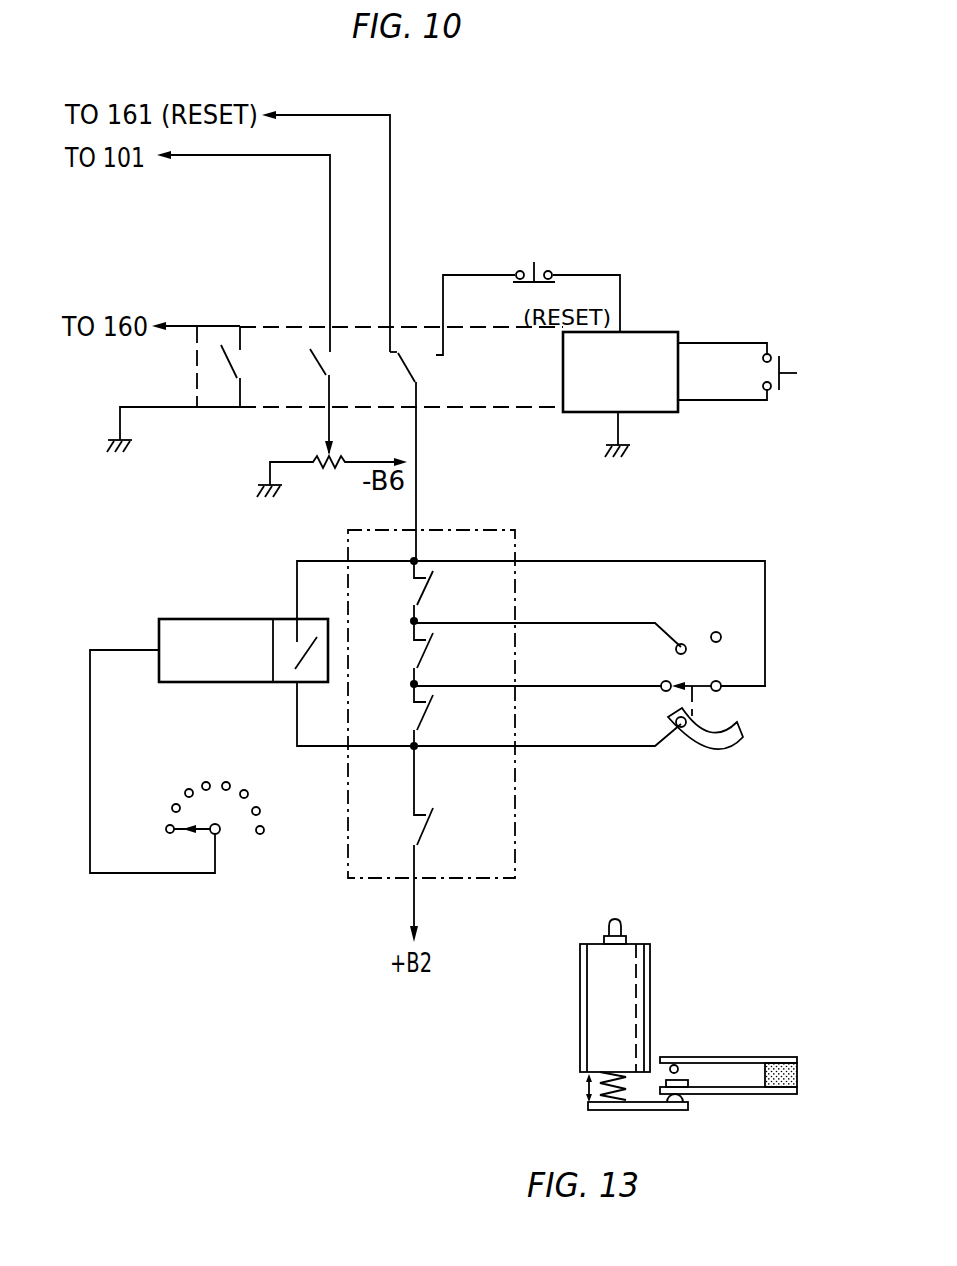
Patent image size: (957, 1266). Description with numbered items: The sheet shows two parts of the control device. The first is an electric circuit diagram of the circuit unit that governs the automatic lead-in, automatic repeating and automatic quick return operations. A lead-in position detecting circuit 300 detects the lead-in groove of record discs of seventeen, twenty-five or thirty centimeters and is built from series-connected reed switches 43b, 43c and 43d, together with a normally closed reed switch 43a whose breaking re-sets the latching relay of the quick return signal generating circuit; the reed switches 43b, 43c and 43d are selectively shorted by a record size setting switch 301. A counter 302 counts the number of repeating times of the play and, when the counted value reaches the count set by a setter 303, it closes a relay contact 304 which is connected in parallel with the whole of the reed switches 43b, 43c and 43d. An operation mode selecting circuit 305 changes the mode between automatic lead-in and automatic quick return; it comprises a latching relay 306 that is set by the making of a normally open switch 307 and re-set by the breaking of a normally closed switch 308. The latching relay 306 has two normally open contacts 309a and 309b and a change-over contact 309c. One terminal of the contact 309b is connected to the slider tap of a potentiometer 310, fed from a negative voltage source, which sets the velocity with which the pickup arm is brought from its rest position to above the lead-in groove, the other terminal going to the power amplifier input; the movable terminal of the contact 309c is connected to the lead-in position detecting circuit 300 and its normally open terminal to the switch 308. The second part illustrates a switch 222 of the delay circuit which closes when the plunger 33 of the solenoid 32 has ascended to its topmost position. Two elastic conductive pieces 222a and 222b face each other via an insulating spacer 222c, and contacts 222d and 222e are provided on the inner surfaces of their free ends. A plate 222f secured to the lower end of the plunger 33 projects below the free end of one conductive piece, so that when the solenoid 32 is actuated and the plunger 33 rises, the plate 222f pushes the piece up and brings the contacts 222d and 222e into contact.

In FIG. 10, the switch of the normally closed type 308 is at (537, 272).
In FIG. 10, the operation mode selecting circuit 305 is at (627, 328).
In FIG. 10, the switch of the normally open type 307 is at (781, 381).
In FIG. 10, the latching relay 306 is at (598, 413).
In FIG. 10, the normally open type contact 309a is at (240, 373).
In FIG. 10, the normally open type contact 309b is at (327, 373).
In FIG. 10, the change-over contact 309c is at (416, 373).
In FIG. 10, the potentiometer 310 is at (332, 462).
In FIG. 10, the lead-in position detecting circuit 300 is at (450, 530).
In FIG. 10, the counter 302 is at (185, 619).
In FIG. 10, the relay contact 304 is at (301, 660).
In FIG. 10, the setter of the number of repeating times 303 is at (219, 836).
In FIG. 10, the record size setting switch 301 is at (722, 698).
In FIG. 10, the reed switch of the normally closed type 43a is at (416, 833).
In FIG. 10, the reed switch 43b is at (418, 718).
In FIG. 10, the reed switch 43c is at (418, 656).
In FIG. 10, the reed switch 43d is at (418, 593).
In FIG. 13, the plunger 33 is at (621, 929).
In FIG. 13, the solenoid 32 is at (588, 1021).
In FIG. 13, the switch 222 is at (758, 1075).
In FIG. 13, the elastic conductive piece 222a is at (728, 1094).
In FIG. 13, the elastic conductive piece 222b is at (700, 1057).
In FIG. 13, the insulating spacer 222c is at (797, 1073).
In FIG. 13, the contact 222d is at (685, 1083).
In FIG. 13, the contact 222e is at (676, 1064).
In FIG. 13, the plate 222f is at (672, 1110).